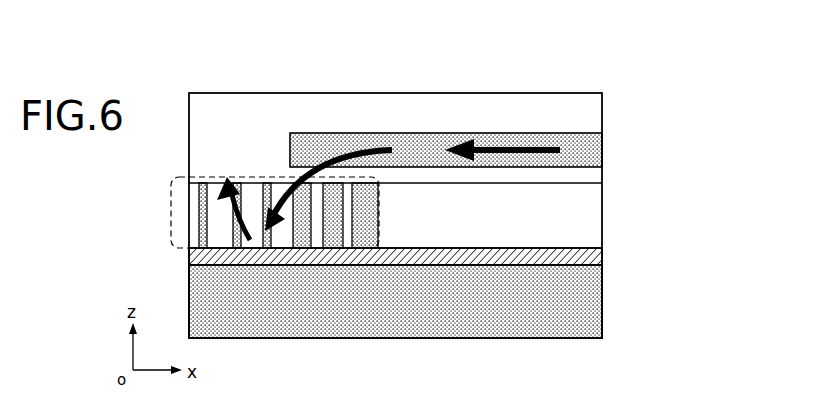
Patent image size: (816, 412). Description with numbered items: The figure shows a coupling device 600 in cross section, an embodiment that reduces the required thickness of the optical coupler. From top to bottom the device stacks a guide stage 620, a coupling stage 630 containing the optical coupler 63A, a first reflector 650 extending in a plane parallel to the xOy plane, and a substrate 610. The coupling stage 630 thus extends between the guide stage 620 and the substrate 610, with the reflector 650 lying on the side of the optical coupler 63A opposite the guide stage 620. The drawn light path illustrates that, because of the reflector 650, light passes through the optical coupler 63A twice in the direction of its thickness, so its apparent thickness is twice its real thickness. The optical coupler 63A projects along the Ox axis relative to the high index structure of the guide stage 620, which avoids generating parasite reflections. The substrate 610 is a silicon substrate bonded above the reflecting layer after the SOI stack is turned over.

The coupling device 600 is at (633, 91).
The substrate 610 is at (602, 320).
The guide stage 620 is at (602, 135).
The coupling stage 630 is at (382, 199).
The optical coupler 63A is at (168, 213).
The first reflector 650 is at (602, 256).